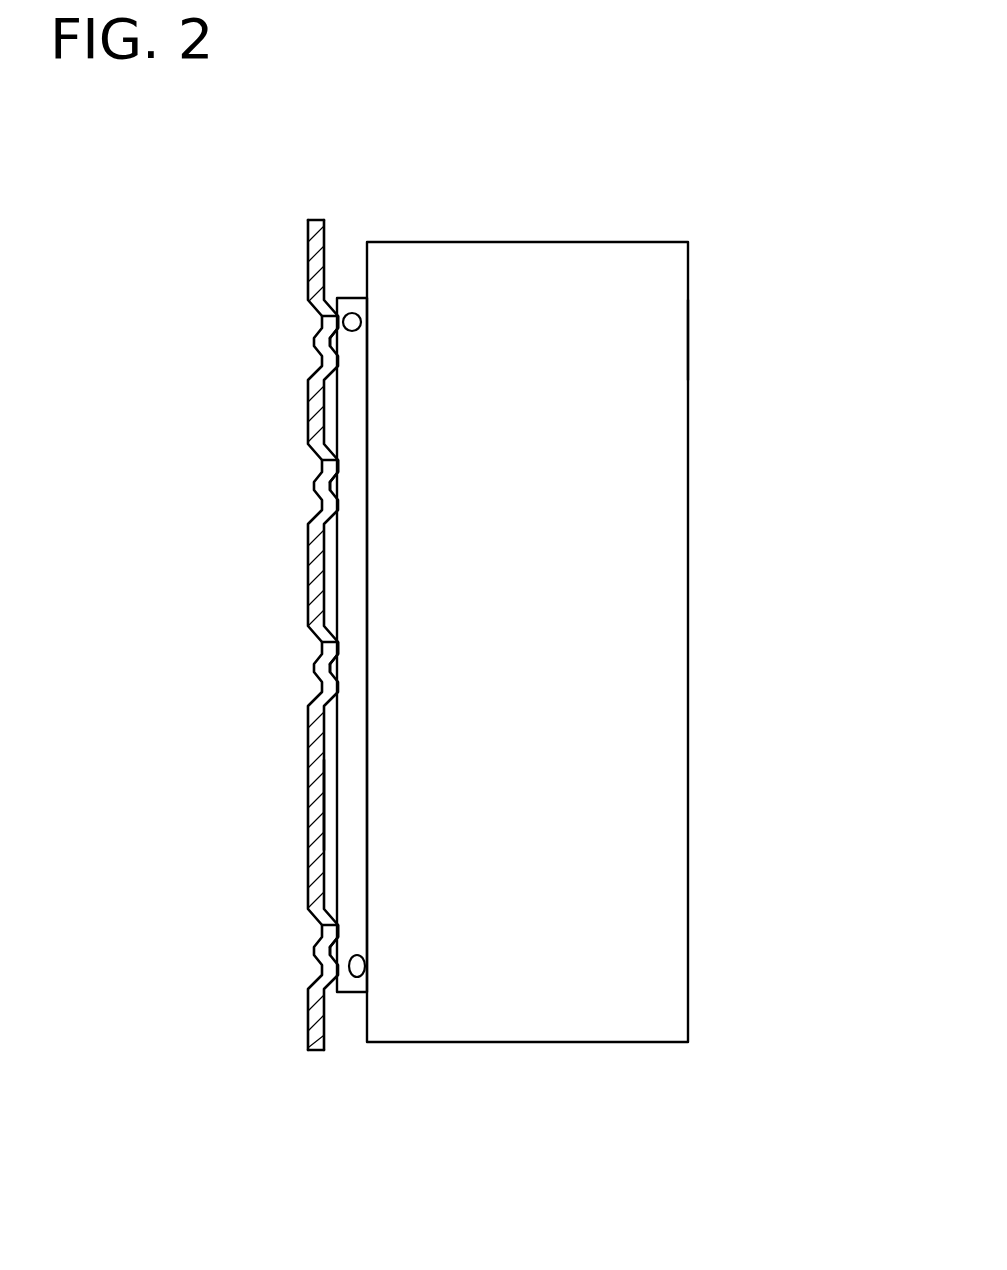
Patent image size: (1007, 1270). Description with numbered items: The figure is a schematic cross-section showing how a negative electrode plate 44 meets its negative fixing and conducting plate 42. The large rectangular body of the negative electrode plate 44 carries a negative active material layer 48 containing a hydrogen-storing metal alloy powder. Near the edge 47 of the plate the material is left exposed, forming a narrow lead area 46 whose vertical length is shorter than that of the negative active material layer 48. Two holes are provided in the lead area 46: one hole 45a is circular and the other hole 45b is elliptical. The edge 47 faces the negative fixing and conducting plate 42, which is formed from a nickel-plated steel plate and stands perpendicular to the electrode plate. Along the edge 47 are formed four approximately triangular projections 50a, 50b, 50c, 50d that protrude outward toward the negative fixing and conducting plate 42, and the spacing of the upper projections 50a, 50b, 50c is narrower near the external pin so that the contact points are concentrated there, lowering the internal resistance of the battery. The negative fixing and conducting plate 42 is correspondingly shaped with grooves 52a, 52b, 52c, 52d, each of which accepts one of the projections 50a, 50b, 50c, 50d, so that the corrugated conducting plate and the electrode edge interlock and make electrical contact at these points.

The negative fixing and conducting plate 42 is at (313, 218).
The negative electrode plate 44 is at (598, 240).
The hole 45a is at (354, 312).
The hole 45b is at (350, 985).
The lead area 46 is at (353, 390).
The edge 47 is at (340, 800).
The negative active material layer 48 is at (673, 335).
The projection 50a is at (324, 324).
The projection 50b is at (324, 468).
The projection 50c is at (324, 650).
The projection 50d is at (324, 933).
The groove 52a is at (318, 345).
The groove 52b is at (318, 489).
The groove 52c is at (318, 671).
The groove 52d is at (318, 954).